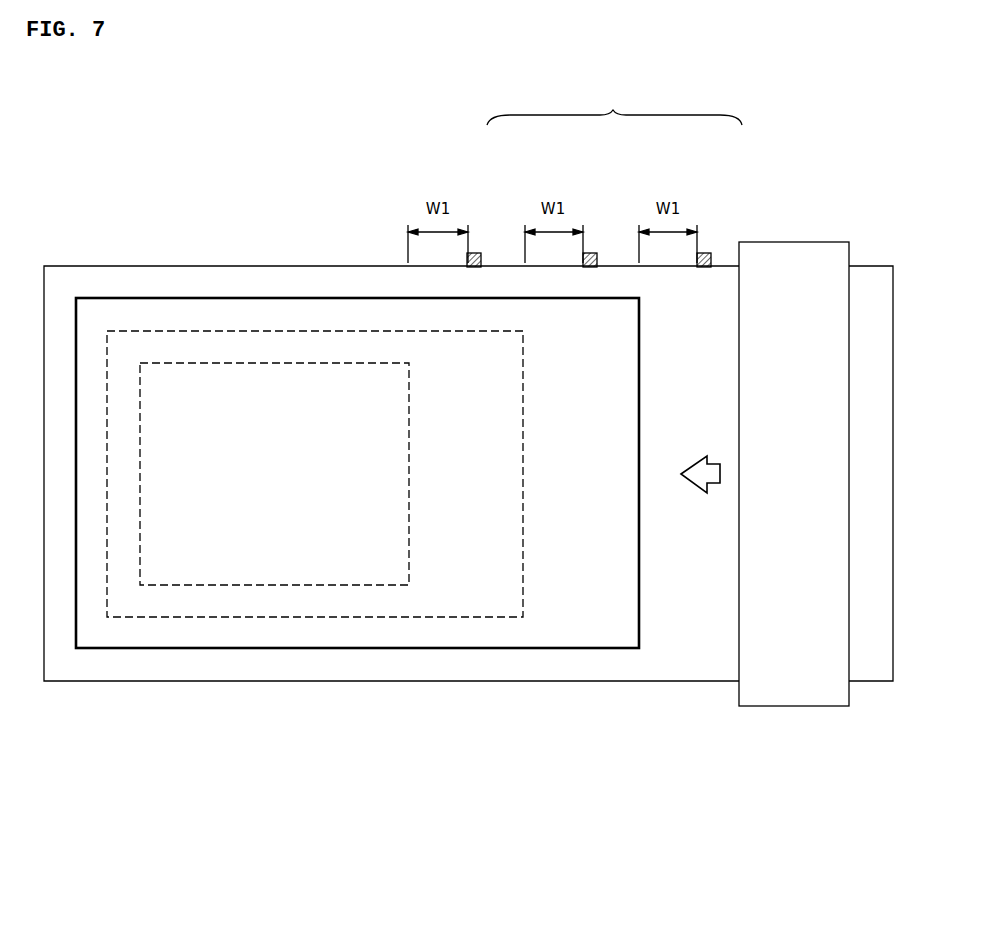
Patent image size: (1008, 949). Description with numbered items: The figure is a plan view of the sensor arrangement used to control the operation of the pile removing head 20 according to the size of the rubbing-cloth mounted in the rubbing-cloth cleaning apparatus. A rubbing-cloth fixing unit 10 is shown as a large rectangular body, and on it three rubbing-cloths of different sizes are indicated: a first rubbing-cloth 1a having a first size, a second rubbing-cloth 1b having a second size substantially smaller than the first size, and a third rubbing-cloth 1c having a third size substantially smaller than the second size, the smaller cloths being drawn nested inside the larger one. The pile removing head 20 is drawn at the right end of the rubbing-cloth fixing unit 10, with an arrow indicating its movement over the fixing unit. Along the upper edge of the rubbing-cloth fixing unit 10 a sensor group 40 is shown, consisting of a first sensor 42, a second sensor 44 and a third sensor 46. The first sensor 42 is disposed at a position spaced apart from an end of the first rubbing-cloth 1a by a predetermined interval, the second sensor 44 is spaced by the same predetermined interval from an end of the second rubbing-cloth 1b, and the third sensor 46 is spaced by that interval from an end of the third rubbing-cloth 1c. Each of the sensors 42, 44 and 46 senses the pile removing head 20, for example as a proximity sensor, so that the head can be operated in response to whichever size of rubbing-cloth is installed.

The rubbing-cloth fixing unit 10 is at (592, 667).
The pile removing head 20 is at (795, 690).
The first rubbing-cloth 1a is at (429, 649).
The second rubbing-cloth 1b is at (316, 617).
The third rubbing-cloth 1c is at (210, 585).
The alignment mark group 40 is at (614, 105).
The first sensor 42 is at (712, 262).
The second sensor 44 is at (597, 262).
The third sensor 46 is at (481, 262).